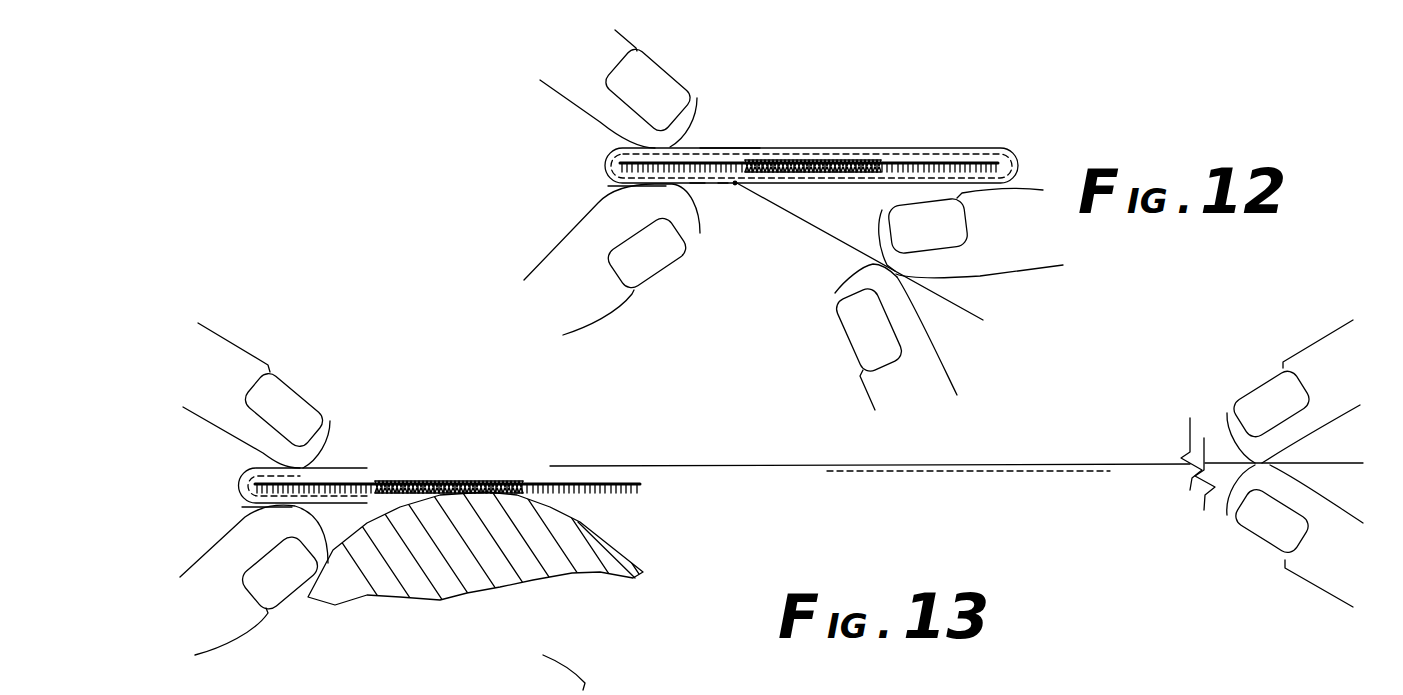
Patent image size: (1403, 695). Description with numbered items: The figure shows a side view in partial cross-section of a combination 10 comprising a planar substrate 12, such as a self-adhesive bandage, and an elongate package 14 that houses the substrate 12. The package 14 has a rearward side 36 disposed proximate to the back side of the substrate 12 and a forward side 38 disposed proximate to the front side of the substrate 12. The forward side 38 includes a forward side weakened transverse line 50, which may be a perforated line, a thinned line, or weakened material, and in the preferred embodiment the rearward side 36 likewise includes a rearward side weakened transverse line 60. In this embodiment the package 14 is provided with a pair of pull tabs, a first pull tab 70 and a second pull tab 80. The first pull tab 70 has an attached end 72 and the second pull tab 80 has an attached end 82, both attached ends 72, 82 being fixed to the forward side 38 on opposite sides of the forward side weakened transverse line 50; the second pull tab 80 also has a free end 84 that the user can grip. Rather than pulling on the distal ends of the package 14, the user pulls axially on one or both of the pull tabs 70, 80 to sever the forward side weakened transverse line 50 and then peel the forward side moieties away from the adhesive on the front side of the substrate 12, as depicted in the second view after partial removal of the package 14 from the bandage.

In FIG. 12, the combination 10 is at (818, 70).
In FIG. 12, the planar substrate 12 is at (840, 160).
In FIG. 12, the package 14 is at (706, 147).
In FIG. 12, the rearward side 36 is at (938, 148).
In FIG. 13, the rearward side 36 is at (713, 466).
In FIG. 12, the forward side 38 is at (866, 182).
In FIG. 13, the forward side 38 is at (1092, 463).
In FIG. 12, the forward side weakened transverse line 50 is at (745, 188).
In FIG. 12, the rearward side weakened transverse line 60 is at (735, 148).
In FIG. 12, the first pull tab 70 is at (819, 231).
In FIG. 13, the first pull tab 70 is at (1330, 462).
In FIG. 12, the attached end 72 is at (758, 183).
In FIG. 12, the second pull tab 80 is at (695, 183).
In FIG. 12, the attached end 82 is at (722, 186).
In FIG. 12, the free end 84 is at (614, 184).